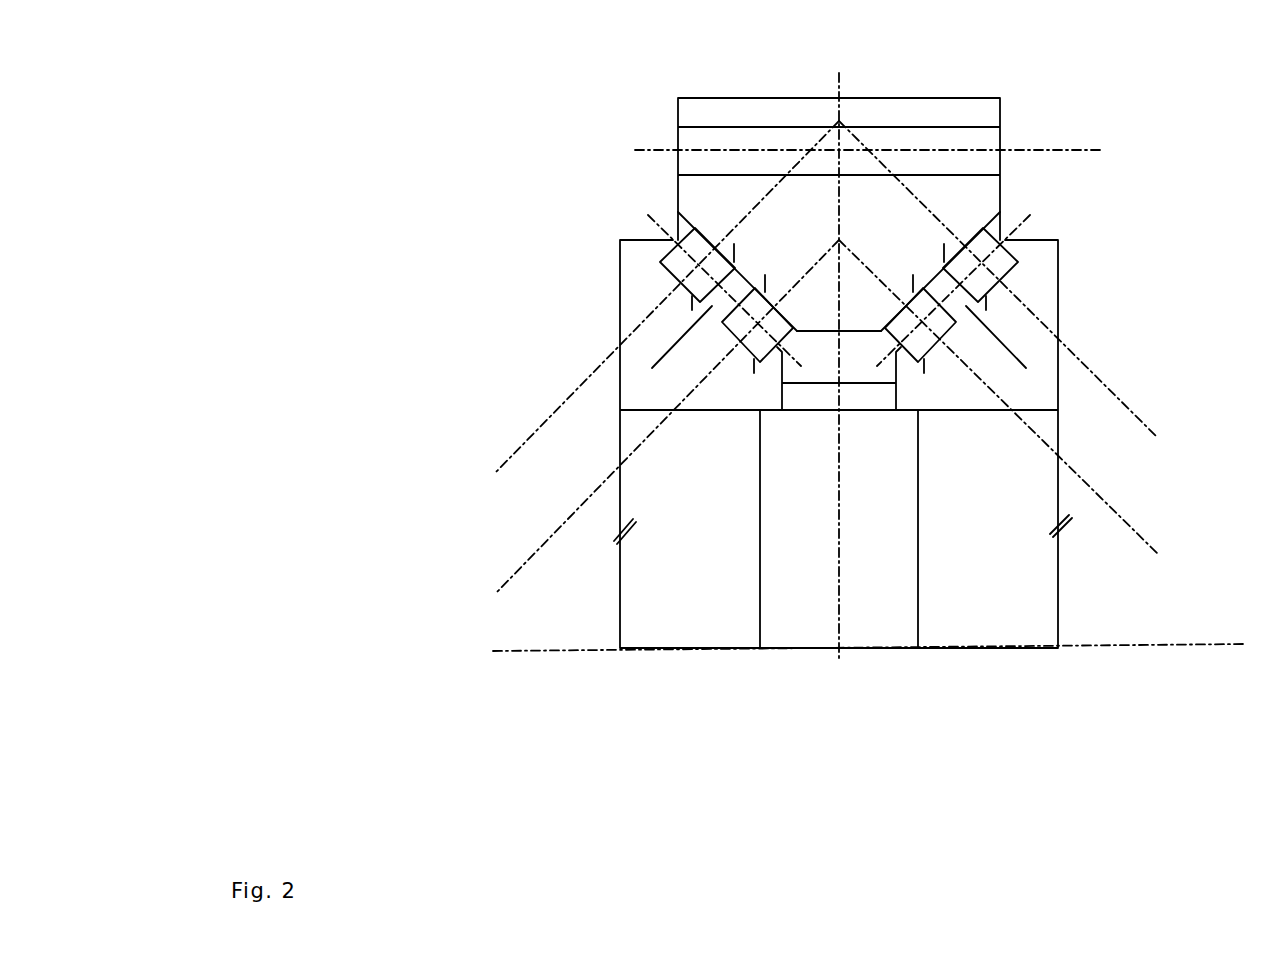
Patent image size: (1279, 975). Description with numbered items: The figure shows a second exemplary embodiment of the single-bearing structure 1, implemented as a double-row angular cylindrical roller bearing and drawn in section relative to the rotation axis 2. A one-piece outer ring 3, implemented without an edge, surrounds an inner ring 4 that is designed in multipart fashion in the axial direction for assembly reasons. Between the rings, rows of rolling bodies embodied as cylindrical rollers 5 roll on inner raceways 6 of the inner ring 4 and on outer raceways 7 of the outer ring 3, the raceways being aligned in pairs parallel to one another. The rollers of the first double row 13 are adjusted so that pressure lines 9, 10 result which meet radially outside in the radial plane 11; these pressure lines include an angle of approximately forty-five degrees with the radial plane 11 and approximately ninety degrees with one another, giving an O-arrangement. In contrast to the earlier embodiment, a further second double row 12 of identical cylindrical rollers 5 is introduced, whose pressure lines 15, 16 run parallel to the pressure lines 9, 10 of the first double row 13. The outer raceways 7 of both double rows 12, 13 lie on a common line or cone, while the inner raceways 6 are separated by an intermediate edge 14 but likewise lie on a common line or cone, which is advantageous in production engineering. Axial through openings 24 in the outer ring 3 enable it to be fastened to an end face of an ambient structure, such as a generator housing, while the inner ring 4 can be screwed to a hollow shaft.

The single-bearing structure 1 is at (1085, 99).
The rotation axis 2 is at (1196, 645).
The outer ring 3 is at (957, 112).
The inner ring 4 is at (1035, 335).
The cylindrical rollers 5 is at (674, 247).
The inner raceways 6 is at (692, 294).
The outer raceways 7 is at (742, 251).
The pressure line 9 is at (787, 295).
The pressure line 10 is at (891, 295).
The radial plane 11 is at (841, 87).
The second double row 12 is at (562, 230).
The first double row 13 is at (562, 308).
The intermediate edge 14 is at (840, 349).
The pressure line 15 is at (748, 214).
The pressure line 16 is at (931, 214).
The through openings 24 is at (686, 133).